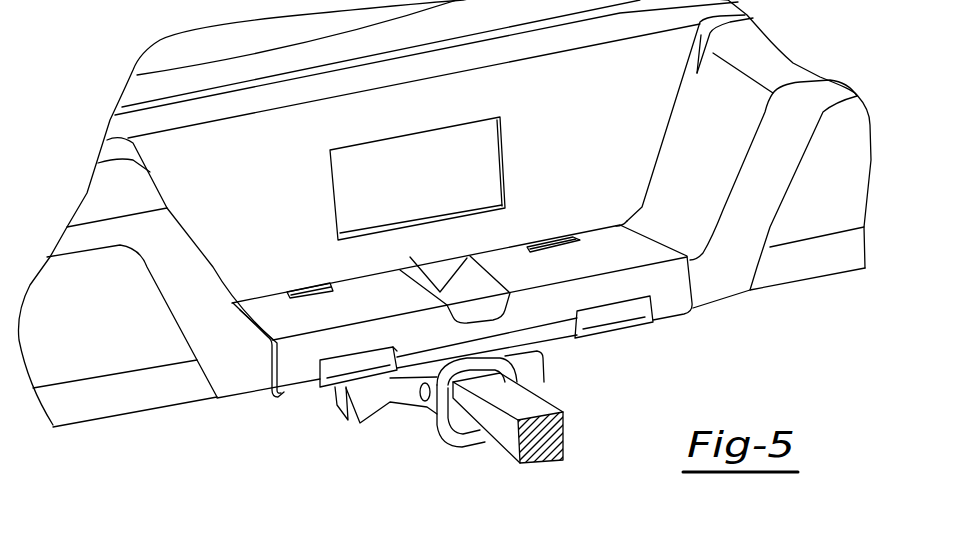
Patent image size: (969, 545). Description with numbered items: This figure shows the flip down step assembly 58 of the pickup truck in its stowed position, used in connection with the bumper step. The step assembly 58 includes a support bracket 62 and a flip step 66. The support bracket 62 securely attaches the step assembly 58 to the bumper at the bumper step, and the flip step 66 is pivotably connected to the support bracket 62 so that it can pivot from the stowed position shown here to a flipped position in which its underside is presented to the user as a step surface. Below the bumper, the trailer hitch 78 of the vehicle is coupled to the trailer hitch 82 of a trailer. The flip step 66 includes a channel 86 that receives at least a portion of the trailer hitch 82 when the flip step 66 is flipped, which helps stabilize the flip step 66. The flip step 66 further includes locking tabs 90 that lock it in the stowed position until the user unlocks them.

The step assembly 58 is at (720, 324).
The support bracket 62 is at (347, 367).
The flip step 66 is at (313, 305).
The trailer hitch 78 is at (430, 413).
The trailer hitch 82 is at (520, 408).
The channel 86 is at (466, 296).
The locking tabs 90 is at (311, 282).